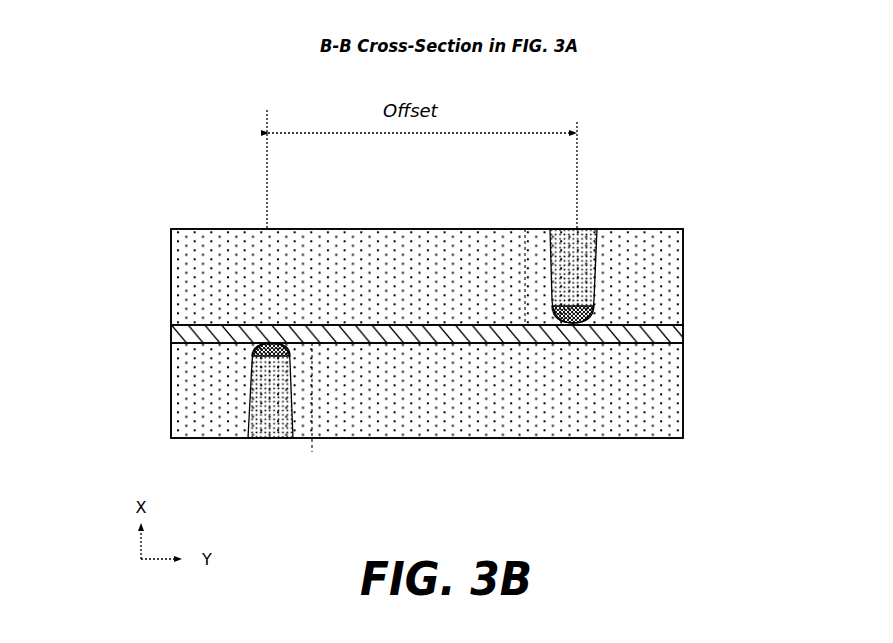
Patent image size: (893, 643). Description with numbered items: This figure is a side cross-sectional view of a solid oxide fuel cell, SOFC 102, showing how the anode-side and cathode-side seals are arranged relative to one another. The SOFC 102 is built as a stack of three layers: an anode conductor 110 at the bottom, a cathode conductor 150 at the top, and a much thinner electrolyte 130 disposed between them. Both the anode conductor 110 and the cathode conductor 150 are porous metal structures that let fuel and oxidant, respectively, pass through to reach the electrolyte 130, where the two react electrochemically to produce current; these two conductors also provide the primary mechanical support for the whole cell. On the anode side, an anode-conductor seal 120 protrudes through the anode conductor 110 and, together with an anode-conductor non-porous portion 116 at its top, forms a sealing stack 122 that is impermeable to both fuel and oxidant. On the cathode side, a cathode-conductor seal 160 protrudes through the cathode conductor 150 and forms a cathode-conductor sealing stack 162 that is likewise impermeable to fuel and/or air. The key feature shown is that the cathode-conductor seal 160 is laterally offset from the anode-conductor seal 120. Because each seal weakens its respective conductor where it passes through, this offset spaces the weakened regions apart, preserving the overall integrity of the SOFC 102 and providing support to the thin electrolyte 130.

The SOFC 102 is at (683, 182).
The cathode conductor 150 is at (182, 273).
The electrolyte 130 is at (172, 333).
The anode conductor 110 is at (187, 387).
The anode-conductor non-porous portion 116 is at (246, 350).
The anode-conductor seal 120 is at (248, 401).
The sealing stack 122 is at (312, 393).
The cathode-conductor seal 160 is at (595, 263).
The cathode-conductor sealing stack 162 is at (522, 278).